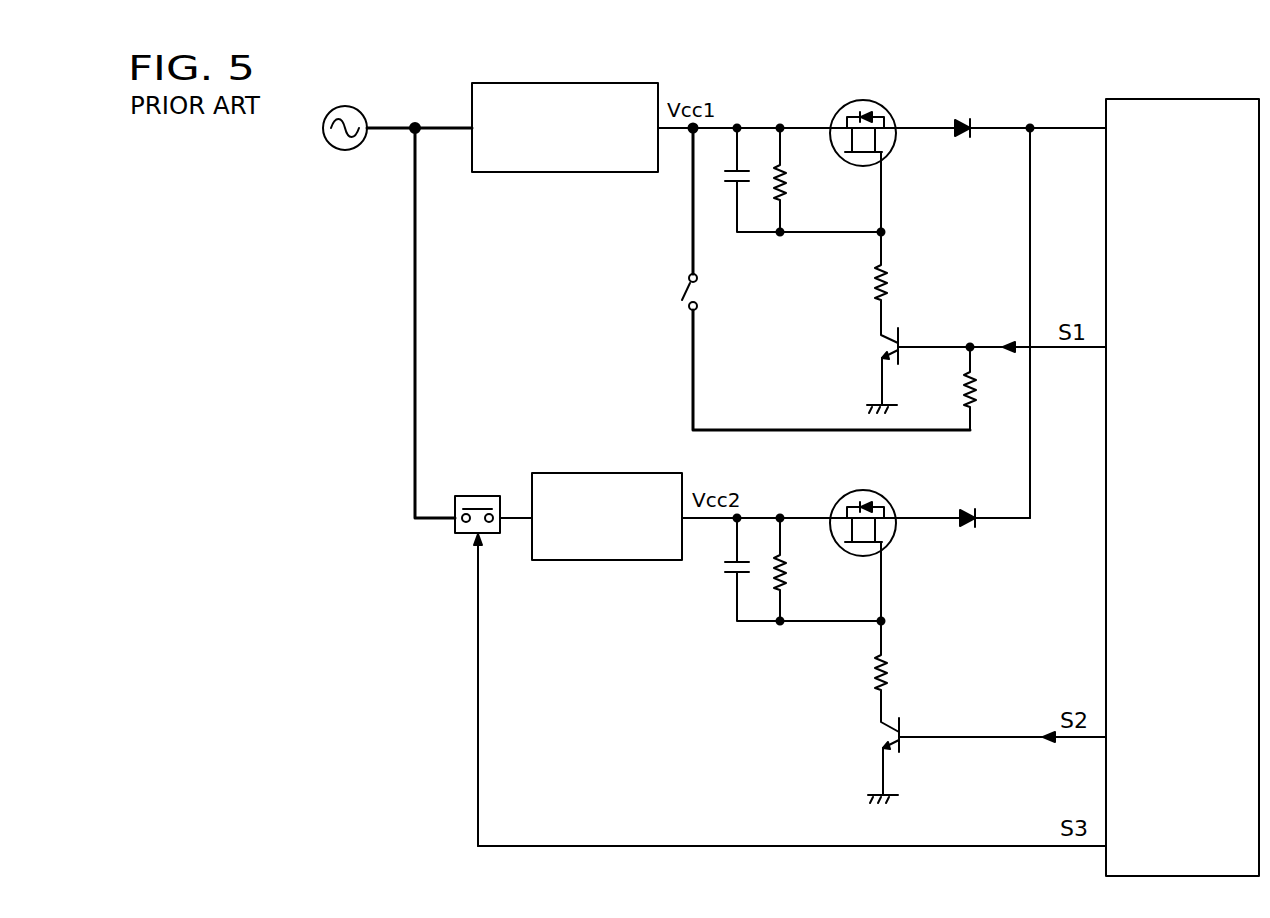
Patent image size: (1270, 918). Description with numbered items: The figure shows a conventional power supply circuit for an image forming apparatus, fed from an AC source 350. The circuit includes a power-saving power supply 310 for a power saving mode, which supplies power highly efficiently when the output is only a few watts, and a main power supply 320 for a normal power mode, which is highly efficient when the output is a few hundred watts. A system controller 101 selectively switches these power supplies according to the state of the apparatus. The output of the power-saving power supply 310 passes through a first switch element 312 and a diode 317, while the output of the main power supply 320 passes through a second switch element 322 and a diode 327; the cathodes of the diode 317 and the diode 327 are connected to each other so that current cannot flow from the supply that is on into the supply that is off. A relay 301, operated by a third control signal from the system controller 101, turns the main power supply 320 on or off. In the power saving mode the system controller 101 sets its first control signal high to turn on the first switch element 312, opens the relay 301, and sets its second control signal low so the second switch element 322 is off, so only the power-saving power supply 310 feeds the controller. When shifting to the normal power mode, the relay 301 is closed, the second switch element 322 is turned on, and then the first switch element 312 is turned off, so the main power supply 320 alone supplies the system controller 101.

The AC power source 350 is at (358, 108).
The power-saving power supply 310 is at (598, 73).
The first switch element 312 is at (873, 101).
The diode 317 is at (969, 115).
The system controller 101 is at (1177, 99).
The relay 301 is at (503, 478).
The main power supply 320 is at (601, 473).
The second switch element 322 is at (873, 499).
The diode 327 is at (976, 505).